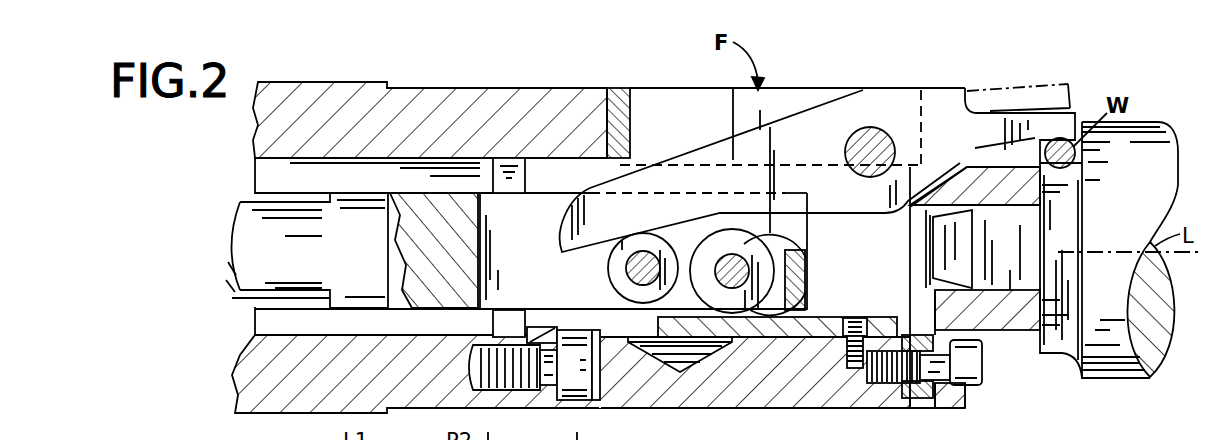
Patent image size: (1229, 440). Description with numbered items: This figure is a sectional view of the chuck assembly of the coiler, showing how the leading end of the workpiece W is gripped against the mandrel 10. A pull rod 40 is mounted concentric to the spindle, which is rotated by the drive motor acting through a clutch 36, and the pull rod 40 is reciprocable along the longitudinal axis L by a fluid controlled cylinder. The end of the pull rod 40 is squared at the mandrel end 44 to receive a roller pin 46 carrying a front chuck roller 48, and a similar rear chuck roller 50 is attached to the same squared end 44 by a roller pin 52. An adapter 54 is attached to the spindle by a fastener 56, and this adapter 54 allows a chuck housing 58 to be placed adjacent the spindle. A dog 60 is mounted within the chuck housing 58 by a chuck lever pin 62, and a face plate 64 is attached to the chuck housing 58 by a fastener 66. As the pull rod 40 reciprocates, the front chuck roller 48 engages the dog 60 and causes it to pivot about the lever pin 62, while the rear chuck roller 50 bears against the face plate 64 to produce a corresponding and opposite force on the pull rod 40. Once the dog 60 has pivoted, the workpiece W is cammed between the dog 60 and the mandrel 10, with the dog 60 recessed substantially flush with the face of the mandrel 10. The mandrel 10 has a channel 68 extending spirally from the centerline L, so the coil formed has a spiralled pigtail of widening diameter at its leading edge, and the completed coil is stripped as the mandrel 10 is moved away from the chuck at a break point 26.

The mandrel 10 is at (1113, 379).
The break point 26 is at (1038, 328).
The clutch 36 is at (376, 84).
The pull rod 40 is at (250, 200).
The mandrel end 44 is at (808, 221).
The roller pin 46 is at (632, 279).
The front chuck roller 48 is at (620, 248).
The rear chuck roller 50 is at (800, 257).
The roller pin 52 is at (745, 282).
The adapter 54 is at (545, 397).
The fastener 56 is at (597, 404).
The chuck housing 58 is at (710, 410).
The dog 60 is at (1072, 112).
The chuck lever pin 62 is at (860, 132).
The face plate 64 is at (877, 316).
The fastener 66 is at (848, 370).
The channel 68 is at (1062, 356).